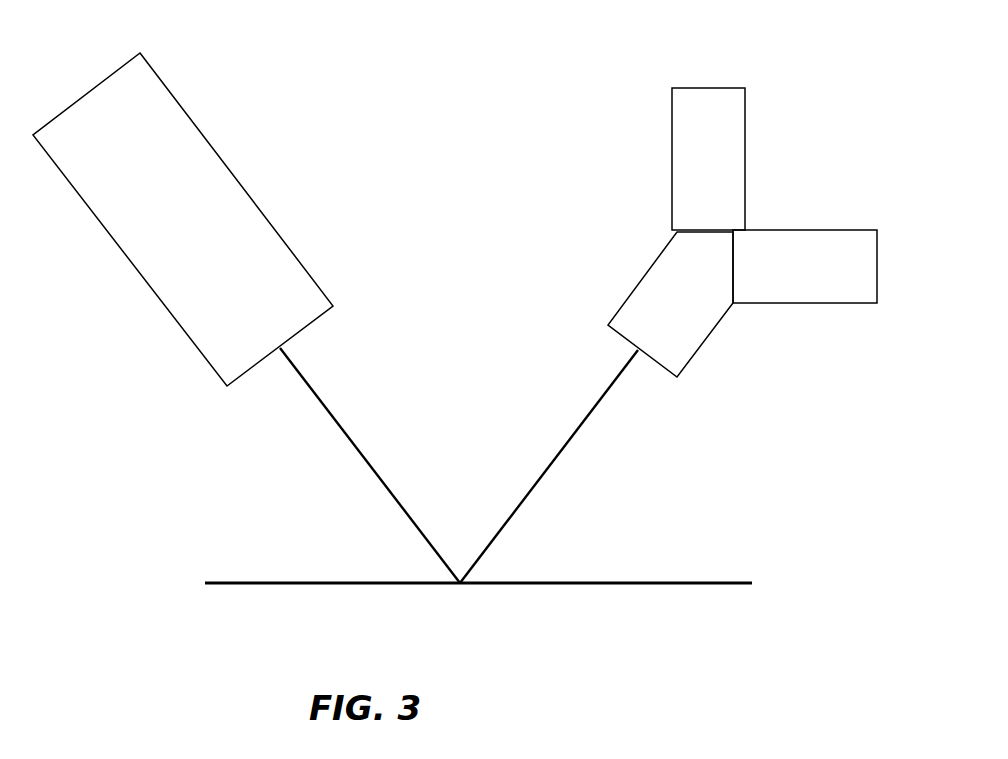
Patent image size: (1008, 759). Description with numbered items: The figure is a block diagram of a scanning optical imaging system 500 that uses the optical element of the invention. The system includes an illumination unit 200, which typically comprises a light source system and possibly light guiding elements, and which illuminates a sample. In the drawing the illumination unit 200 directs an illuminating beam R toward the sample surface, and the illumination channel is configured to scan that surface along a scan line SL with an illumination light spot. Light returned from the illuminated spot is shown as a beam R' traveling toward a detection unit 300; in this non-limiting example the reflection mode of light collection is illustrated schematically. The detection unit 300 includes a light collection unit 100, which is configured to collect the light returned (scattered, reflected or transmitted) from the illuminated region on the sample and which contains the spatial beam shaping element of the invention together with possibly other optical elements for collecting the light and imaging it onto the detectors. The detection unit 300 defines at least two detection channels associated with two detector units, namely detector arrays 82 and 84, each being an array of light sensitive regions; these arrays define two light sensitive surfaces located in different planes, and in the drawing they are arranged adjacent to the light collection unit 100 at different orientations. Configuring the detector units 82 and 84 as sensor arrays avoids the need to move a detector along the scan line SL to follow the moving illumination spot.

The optical imaging system 500 is at (407, 98).
The detection unit 300 is at (833, 136).
The illumination unit 200 is at (183, 219).
The light collection unit 100 is at (670, 304).
The detector array 82 is at (678, 152).
The detector array 84 is at (787, 290).
The incident light ray R is at (363, 465).
The reflected light ray R' is at (549, 466).
The scan line SL is at (515, 585).